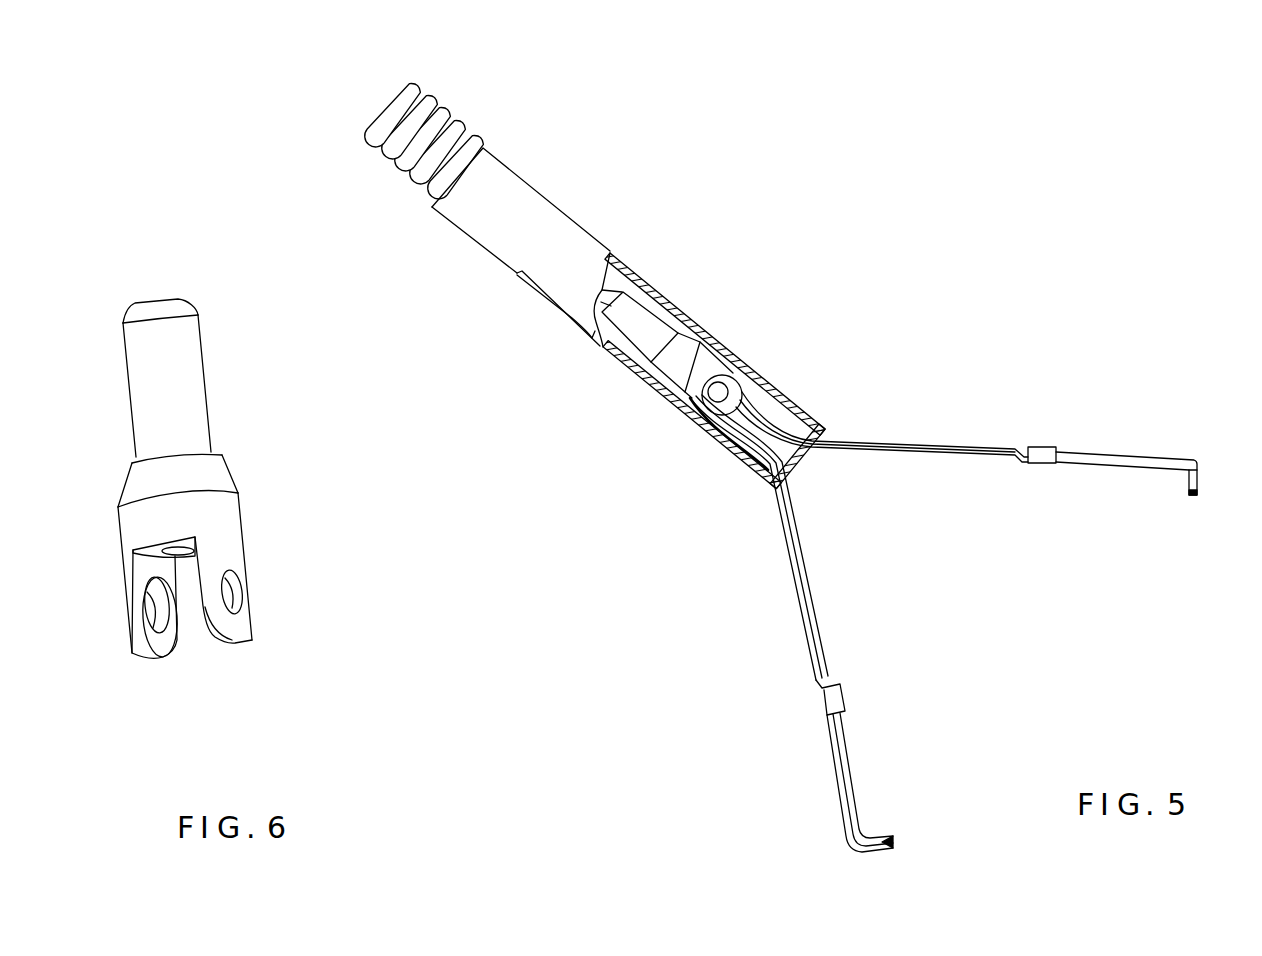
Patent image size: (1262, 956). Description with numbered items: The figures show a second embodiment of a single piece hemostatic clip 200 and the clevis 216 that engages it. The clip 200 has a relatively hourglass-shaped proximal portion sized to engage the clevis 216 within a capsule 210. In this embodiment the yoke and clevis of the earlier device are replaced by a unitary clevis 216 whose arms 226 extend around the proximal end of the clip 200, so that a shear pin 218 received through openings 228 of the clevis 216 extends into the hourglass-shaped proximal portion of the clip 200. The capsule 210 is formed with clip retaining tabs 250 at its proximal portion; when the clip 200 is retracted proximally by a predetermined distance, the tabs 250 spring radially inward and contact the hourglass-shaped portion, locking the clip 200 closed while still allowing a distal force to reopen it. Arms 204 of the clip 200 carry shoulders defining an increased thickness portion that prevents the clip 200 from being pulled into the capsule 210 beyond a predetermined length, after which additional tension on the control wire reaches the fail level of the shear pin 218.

In FIG. 5, the clip 200 is at (778, 465).
In FIG. 5, the arms 204 is at (972, 458).
In FIG. 5, the capsule 210 is at (586, 227).
In FIG. 6, the clevis 216 is at (244, 510).
In FIG. 5, the shear pin 218 is at (719, 391).
In FIG. 6, the arms 226 is at (152, 656).
In FIG. 6, the openings 228 is at (232, 598).
In FIG. 5, the clip retaining tabs 250 is at (543, 296).